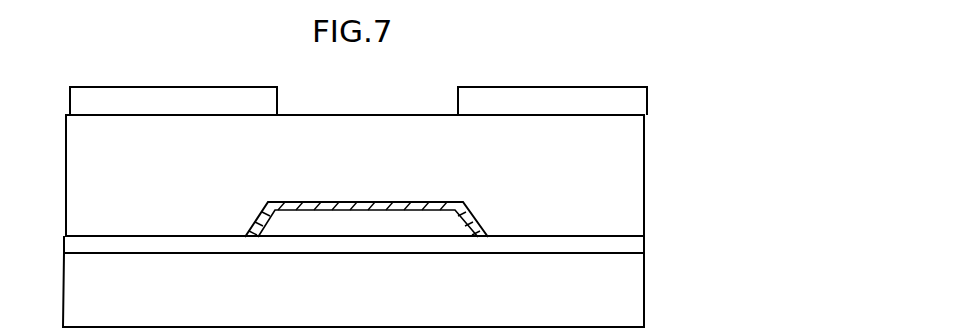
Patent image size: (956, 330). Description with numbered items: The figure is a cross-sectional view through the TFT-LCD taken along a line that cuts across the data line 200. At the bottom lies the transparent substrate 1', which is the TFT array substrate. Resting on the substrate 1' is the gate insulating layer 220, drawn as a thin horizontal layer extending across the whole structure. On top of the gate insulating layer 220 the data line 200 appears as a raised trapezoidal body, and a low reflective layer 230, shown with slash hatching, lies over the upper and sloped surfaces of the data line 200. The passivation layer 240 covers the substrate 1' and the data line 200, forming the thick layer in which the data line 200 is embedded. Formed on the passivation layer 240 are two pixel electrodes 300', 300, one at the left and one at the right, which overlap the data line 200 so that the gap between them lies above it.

The transparent substrate 1' is at (444, 290).
The gate insulating layer 220 is at (635, 244).
The passivation layer 240 is at (644, 186).
The pixel electrode 300' is at (173, 84).
The pixel electrode 300 is at (663, 96).
The data line 200 is at (362, 223).
The low reflective layer 230 is at (463, 203).